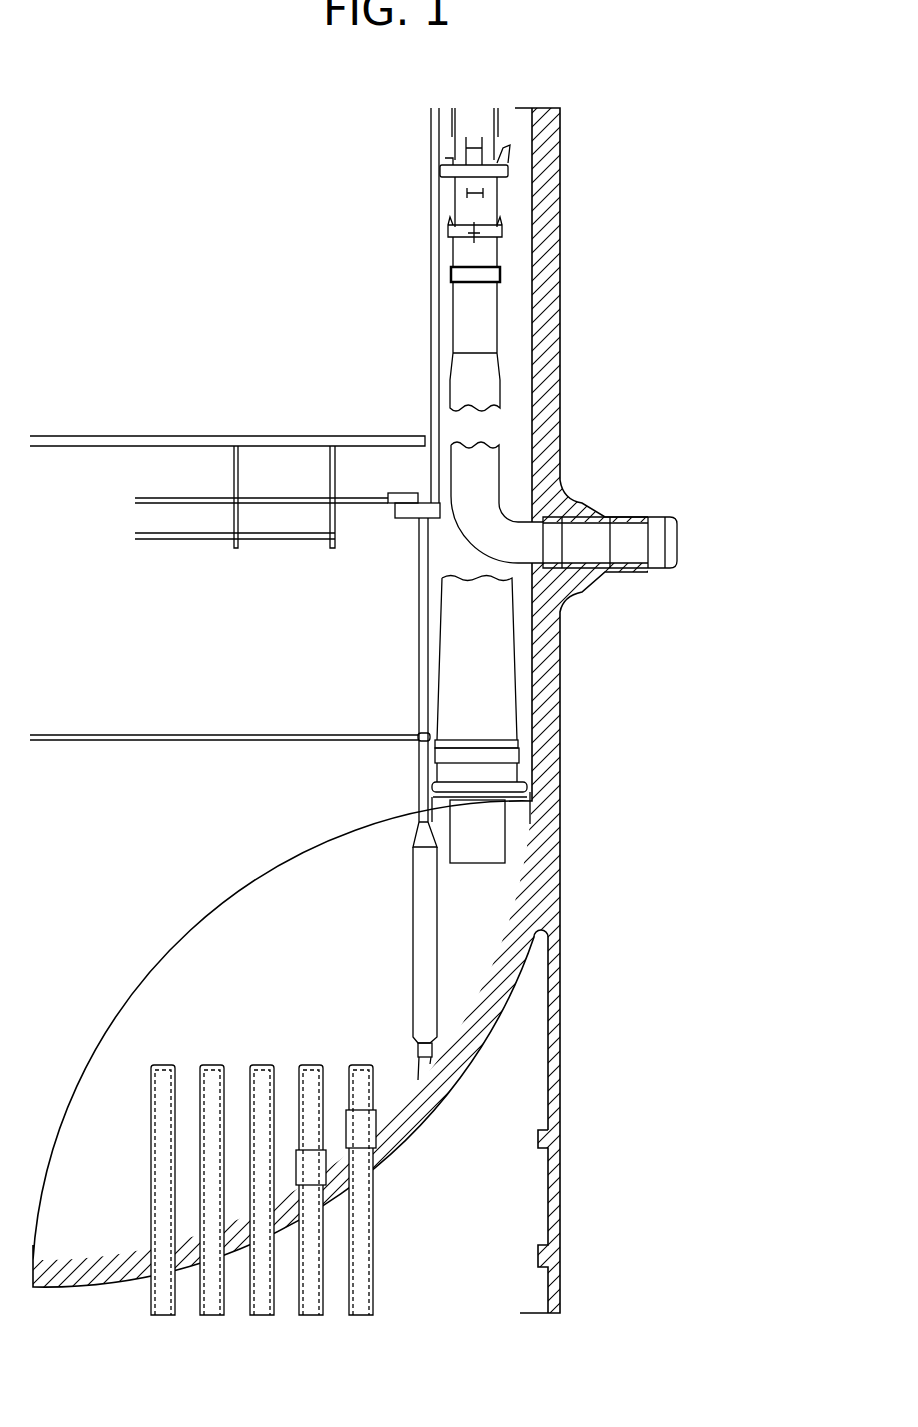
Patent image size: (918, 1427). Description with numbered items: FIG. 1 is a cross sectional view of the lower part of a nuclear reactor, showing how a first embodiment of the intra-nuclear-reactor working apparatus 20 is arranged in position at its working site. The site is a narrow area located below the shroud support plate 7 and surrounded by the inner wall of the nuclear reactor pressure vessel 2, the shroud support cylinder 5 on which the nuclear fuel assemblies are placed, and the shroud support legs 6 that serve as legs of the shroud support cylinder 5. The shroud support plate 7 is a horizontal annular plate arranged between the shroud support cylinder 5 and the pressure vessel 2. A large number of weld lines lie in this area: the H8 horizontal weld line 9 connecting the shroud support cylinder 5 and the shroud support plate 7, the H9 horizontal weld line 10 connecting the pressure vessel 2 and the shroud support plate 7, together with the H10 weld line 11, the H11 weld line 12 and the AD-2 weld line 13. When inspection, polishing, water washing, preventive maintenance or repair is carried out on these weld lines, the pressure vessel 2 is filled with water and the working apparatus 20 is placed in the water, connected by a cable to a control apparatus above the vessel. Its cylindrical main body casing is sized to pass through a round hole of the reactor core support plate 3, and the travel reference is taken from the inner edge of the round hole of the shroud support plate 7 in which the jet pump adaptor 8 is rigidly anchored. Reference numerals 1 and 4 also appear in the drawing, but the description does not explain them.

The guide tube 1 is at (433, 323).
The nuclear reactor pressure vessel 2 is at (552, 338).
The reactor core support plate 3 is at (173, 443).
The thimble tube 4 is at (418, 635).
The shroud support cylinder 5 is at (422, 755).
The shroud support legs 6 is at (413, 935).
The shroud support plate 7 is at (502, 785).
The jet pump adaptor 8 is at (482, 767).
The H8 horizontal weld line 9 is at (432, 782).
The H9 horizontal weld line 10 is at (530, 785).
The H10 weld line 11 is at (418, 833).
The H11 weld line 12 is at (418, 1052).
The AD-2 weld line 13 is at (442, 773).
The intra-nuclear-reactor working apparatus 20 is at (478, 858).